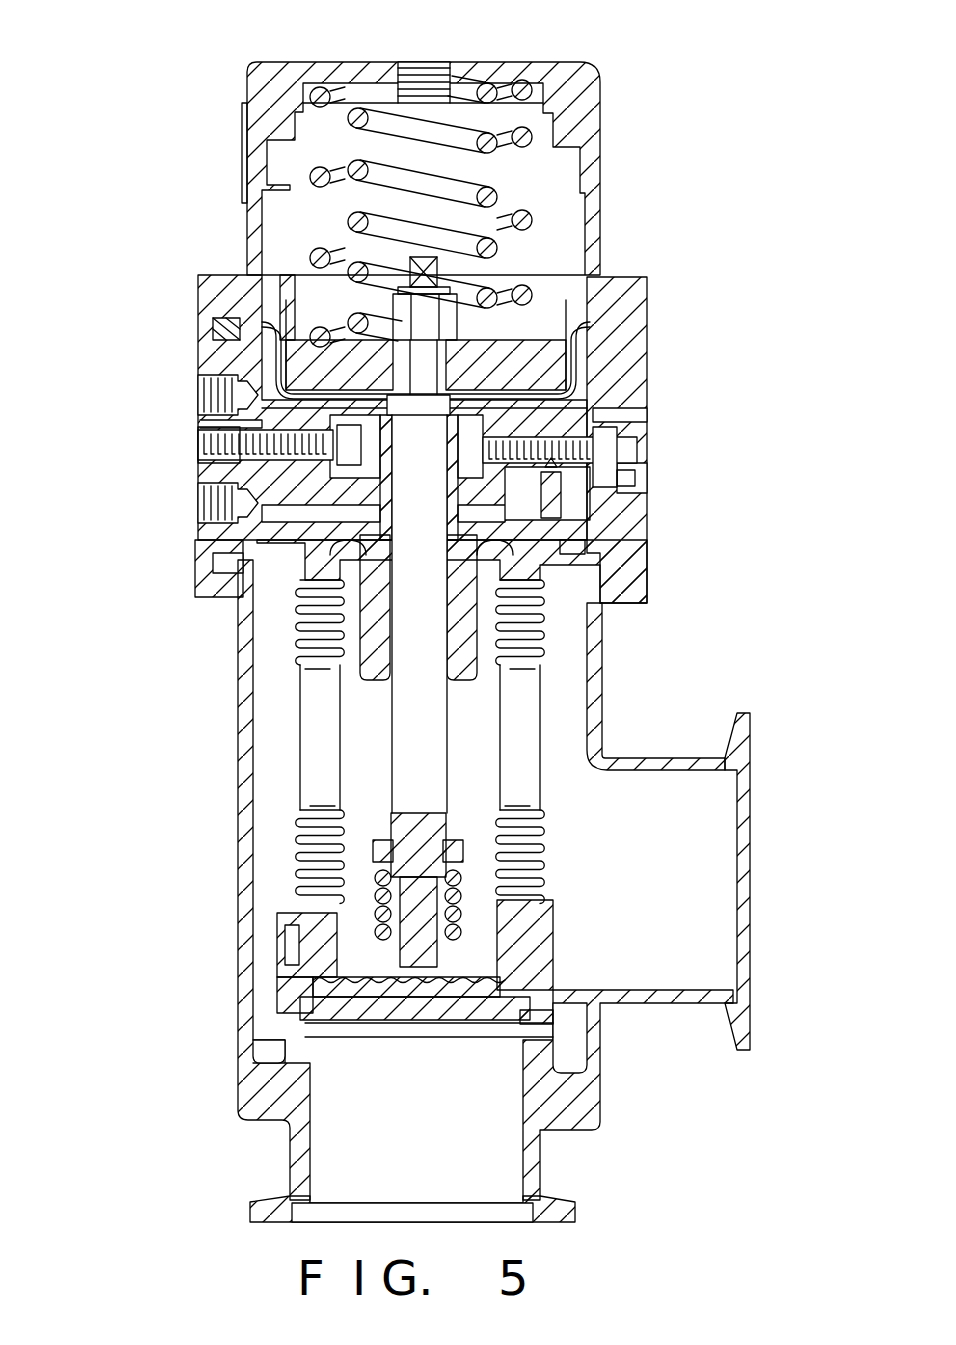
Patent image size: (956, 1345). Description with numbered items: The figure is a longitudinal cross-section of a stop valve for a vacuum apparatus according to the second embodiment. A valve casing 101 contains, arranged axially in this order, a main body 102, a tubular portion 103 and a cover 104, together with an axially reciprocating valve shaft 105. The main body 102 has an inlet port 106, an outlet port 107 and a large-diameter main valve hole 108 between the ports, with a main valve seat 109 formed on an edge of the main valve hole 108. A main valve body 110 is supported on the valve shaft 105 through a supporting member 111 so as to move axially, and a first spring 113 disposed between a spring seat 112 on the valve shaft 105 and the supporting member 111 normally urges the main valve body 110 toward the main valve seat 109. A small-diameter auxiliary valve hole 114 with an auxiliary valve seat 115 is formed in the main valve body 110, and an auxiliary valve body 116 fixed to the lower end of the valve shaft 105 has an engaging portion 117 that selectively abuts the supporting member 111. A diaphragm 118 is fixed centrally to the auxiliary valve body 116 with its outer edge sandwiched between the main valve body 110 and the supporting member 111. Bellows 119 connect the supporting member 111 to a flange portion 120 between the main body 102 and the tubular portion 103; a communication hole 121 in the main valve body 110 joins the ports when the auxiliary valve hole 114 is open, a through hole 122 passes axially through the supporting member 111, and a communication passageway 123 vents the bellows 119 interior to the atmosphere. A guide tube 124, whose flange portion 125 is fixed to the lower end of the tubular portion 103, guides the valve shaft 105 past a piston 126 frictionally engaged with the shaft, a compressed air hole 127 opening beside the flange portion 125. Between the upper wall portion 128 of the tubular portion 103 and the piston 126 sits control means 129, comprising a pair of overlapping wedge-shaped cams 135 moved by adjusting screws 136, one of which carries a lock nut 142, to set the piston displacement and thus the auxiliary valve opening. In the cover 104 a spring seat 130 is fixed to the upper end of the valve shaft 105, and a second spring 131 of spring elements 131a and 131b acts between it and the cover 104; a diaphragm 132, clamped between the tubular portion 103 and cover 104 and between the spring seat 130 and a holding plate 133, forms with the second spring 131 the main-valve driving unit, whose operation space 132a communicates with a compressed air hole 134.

The valve casing 101 is at (172, 673).
The main body 102 is at (238, 816).
The tubular portion 103 is at (198, 448).
The cover 104 is at (247, 230).
The valve shaft 105 is at (405, 742).
The inlet port 106 is at (318, 1150).
The outlet port 107 is at (718, 962).
The main valve hole 108 is at (548, 1062).
The main valve seat 109 is at (545, 1018).
The main valve body 110 is at (493, 1020).
The supporting member 111 is at (515, 950).
The spring seat 112 is at (450, 852).
The first spring 113 is at (462, 862).
The auxiliary valve hole 114 is at (425, 997).
The auxiliary valve seat 115 is at (455, 997).
The auxiliary valve body 116 is at (382, 1013).
The engaging portion 117 is at (360, 1013).
The diaphragm 118 is at (290, 965).
The bellows 119 is at (300, 862).
The flange portion 120 is at (262, 580).
The communication hole 121 is at (283, 998).
The through hole 122 is at (320, 945).
The communication passageway 123 is at (605, 565).
The guide tube 124 is at (465, 645).
The flange portion 125 is at (598, 550).
The piston 126 is at (590, 516).
The compressed air hole 127 is at (206, 494).
The upper wall portion 128 is at (598, 397).
The control means 129 is at (610, 420).
The spring seat 130 is at (622, 342).
The second spring 131 is at (560, 187).
The spring element 131a is at (535, 135).
The spring element 131b is at (497, 88).
The diaphragm 132 is at (580, 322).
The operation space 132a is at (226, 362).
The holding plate 133 is at (608, 360).
The compressed air hole 134 is at (206, 392).
The wedge-shaped cams 135 is at (210, 414).
The adjusting screws 136 is at (620, 452).
The lock nut 142 is at (635, 482).